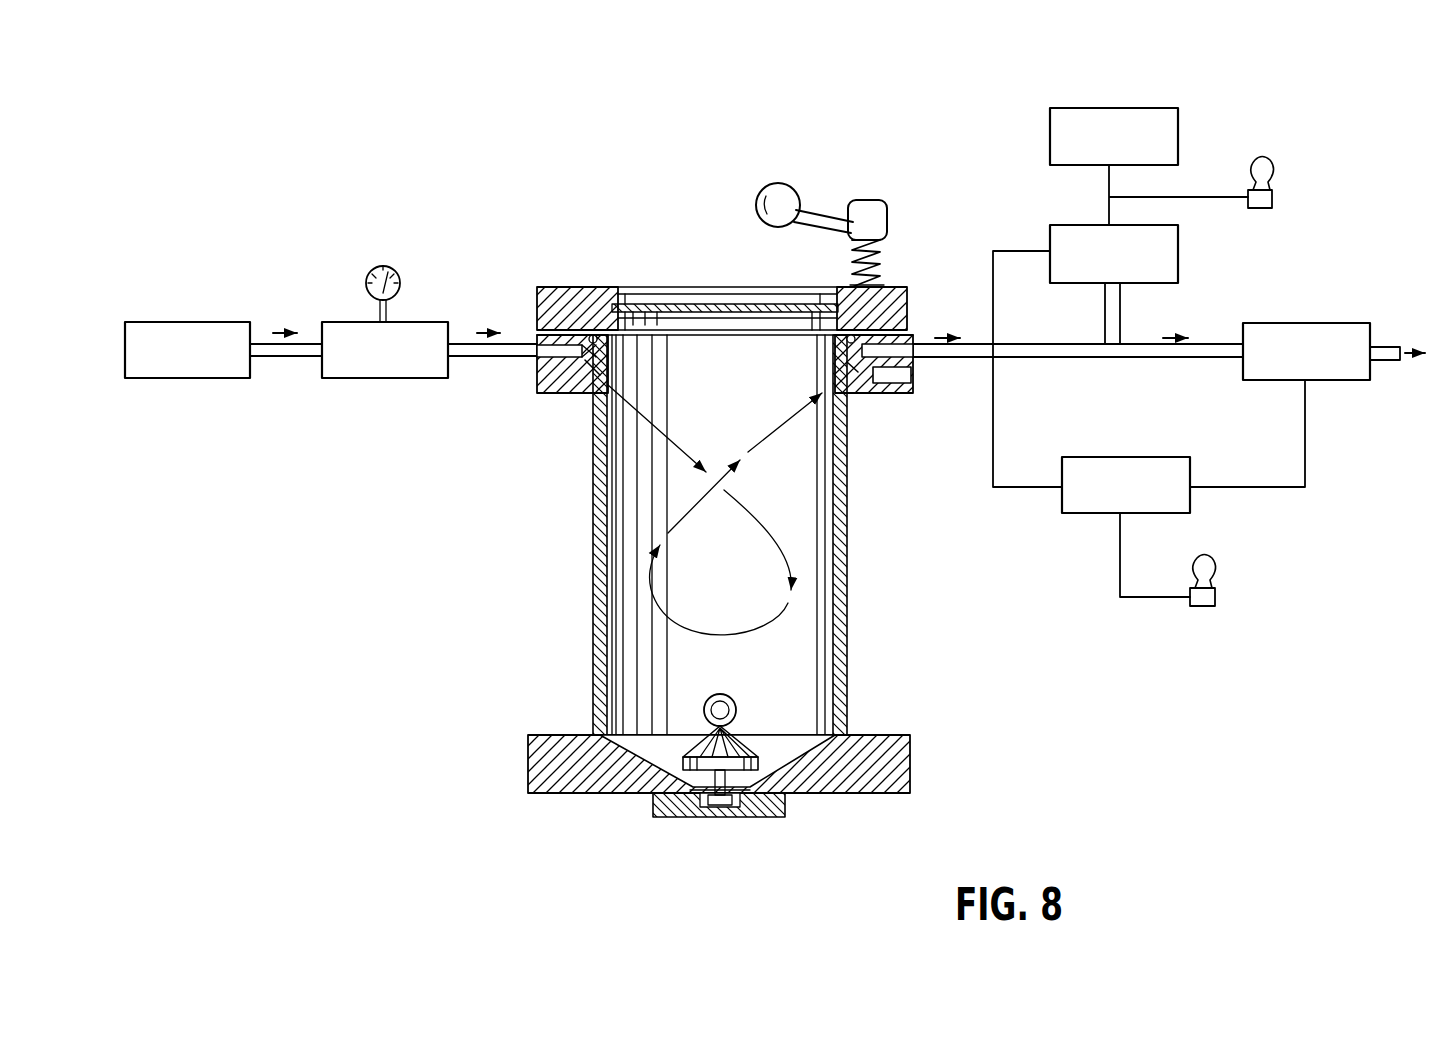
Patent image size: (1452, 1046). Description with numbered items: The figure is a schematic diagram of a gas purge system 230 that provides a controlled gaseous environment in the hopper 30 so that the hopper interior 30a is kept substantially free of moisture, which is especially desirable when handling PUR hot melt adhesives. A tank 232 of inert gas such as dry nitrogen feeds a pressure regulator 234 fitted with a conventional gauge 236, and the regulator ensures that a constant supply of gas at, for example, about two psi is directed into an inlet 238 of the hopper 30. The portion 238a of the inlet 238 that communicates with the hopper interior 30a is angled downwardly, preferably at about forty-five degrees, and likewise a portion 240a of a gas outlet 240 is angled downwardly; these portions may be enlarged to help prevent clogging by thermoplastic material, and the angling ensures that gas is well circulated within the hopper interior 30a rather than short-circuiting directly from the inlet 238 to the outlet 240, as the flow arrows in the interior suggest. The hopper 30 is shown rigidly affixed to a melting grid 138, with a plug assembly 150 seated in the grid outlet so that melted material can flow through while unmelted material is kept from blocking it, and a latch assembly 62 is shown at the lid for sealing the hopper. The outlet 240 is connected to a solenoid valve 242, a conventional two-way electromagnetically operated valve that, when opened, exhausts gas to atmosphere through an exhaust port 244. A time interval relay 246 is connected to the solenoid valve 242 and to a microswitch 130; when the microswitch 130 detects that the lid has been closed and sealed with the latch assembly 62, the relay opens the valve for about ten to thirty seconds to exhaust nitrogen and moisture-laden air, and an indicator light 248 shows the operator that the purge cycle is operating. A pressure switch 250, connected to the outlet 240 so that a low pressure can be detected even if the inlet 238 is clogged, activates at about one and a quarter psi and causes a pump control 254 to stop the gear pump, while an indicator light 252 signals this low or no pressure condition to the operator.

The gas purge system 230 is at (873, 121).
The tank of inert gas 232 is at (160, 322).
The pressure regulator 234 is at (413, 322).
The gauge 236 is at (389, 268).
The inlet 238 is at (545, 360).
The portion of inlet 238a is at (600, 363).
The gas outlet 240 is at (906, 329).
The portion of gas outlet 240a is at (848, 393).
The microswitch 130 is at (900, 396).
The latch assembly 62 is at (888, 208).
The hopper 30 is at (848, 553).
The hopper interior 30a is at (733, 586).
The plug assembly 150 is at (748, 712).
The melting grid 138 is at (868, 735).
The pump control 254 is at (1178, 126).
The indicator light 252 is at (1268, 158).
The pressure switch 250 is at (1178, 264).
The solenoid valve 242 is at (1326, 323).
The exhaust port 244 is at (1395, 347).
The time interval relay 246 is at (1110, 457).
The indicator light 248 is at (1208, 559).